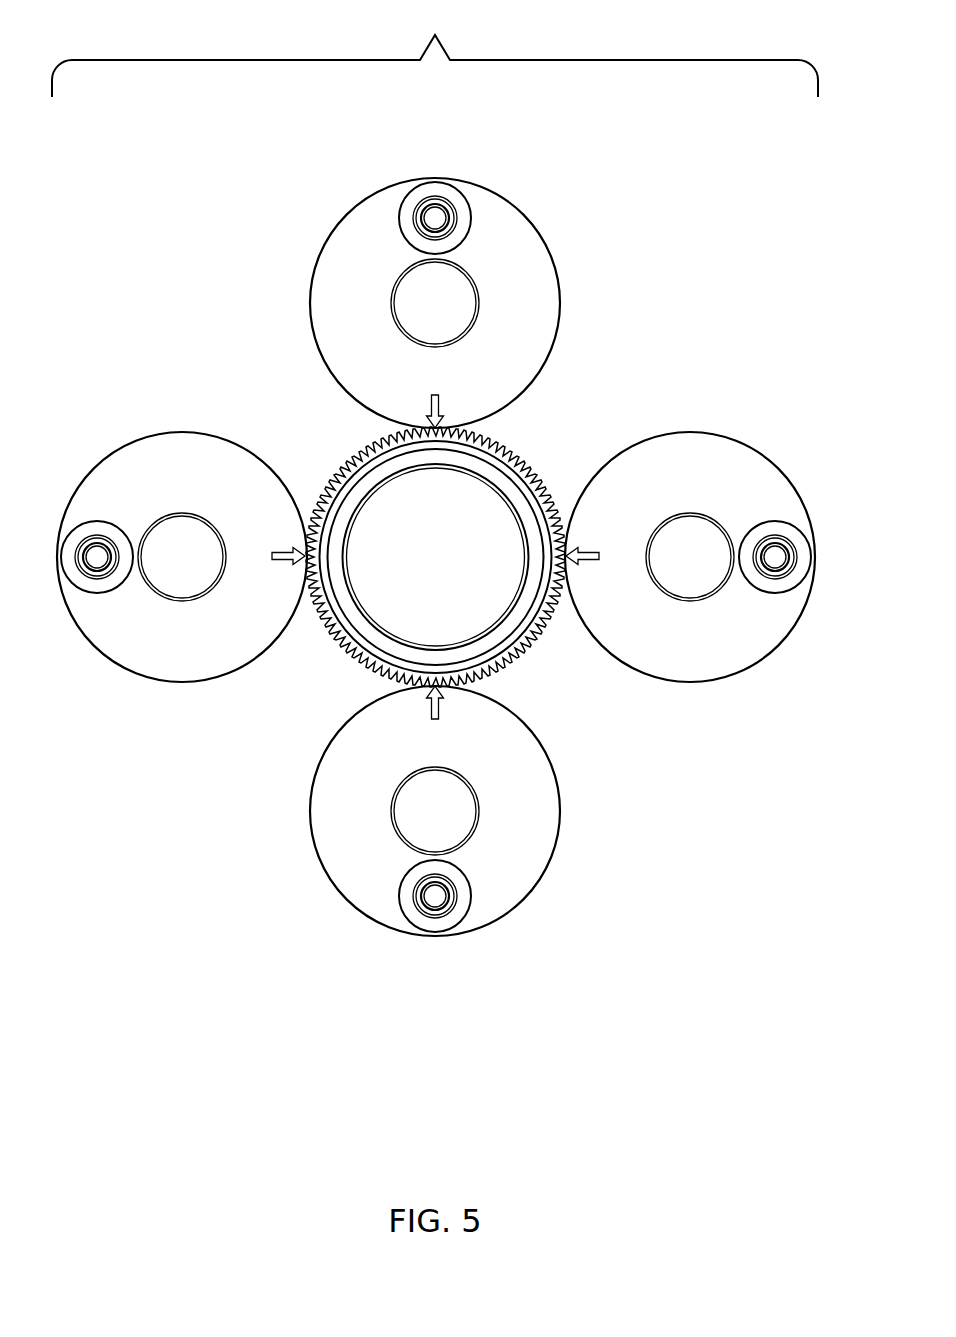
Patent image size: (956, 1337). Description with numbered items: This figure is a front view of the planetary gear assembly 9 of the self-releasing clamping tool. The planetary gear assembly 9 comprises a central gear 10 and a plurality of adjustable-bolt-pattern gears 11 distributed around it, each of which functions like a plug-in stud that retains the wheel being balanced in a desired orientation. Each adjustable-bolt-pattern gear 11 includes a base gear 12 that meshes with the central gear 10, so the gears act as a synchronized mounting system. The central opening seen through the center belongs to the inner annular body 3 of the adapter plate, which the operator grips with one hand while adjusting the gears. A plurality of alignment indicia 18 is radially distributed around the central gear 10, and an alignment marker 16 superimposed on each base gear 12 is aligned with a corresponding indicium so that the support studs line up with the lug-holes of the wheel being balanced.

The planetary gear assembly 9 is at (435, 51).
The inner annular body 3 is at (395, 506).
The central gear 10 is at (535, 650).
The adjustable-bolt-pattern gear 11 is at (303, 255).
The base gear 12 is at (553, 306).
The alignment marker 16 is at (434, 396).
The alignment indicia 18 is at (322, 494).